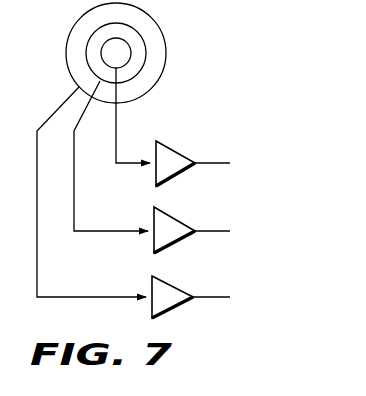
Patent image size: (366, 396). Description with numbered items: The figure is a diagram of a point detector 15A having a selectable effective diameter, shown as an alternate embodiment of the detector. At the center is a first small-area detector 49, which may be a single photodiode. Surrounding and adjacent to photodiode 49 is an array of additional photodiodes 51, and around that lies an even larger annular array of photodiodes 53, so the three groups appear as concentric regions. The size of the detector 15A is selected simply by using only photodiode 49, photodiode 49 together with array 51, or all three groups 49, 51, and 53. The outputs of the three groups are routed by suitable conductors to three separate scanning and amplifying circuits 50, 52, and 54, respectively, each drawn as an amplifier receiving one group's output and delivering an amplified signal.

The detector 15A is at (58, 79).
The first small-area detector 49 is at (132, 53).
The array of additional photodiodes 51 is at (139, 37).
The annular array of photodiodes 53 is at (157, 78).
The scanning and amplifying circuit 50 is at (180, 152).
The scanning and amplifying circuit 52 is at (180, 219).
The scanning and amplifying circuit 54 is at (180, 287).